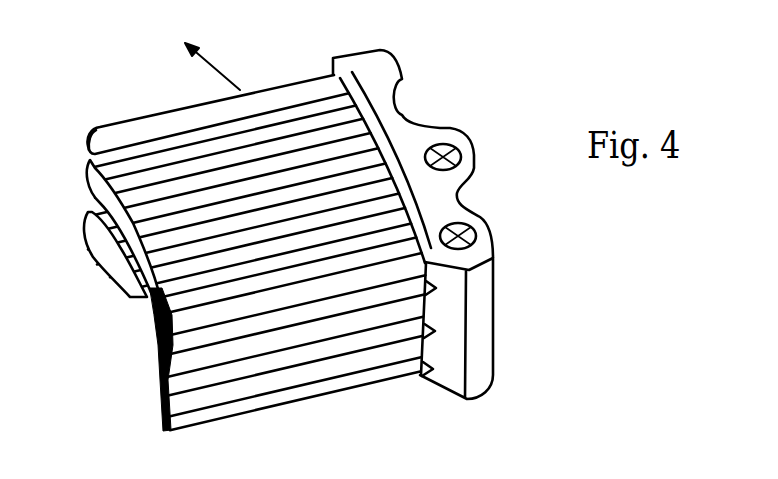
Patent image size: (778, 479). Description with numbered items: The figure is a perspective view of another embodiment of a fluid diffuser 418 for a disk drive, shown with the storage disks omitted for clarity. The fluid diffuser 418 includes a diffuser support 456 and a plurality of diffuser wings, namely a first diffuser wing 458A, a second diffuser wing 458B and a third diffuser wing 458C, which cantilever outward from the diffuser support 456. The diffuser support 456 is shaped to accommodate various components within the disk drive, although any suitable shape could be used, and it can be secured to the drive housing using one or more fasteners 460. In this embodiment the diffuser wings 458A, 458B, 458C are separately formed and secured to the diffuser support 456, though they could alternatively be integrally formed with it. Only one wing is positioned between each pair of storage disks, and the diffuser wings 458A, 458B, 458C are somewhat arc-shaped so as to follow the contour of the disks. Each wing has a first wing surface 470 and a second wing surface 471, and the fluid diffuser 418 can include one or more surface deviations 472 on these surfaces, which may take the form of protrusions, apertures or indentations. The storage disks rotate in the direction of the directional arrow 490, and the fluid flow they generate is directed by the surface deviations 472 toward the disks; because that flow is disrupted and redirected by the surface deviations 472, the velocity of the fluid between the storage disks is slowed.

The fluid diffuser 418 is at (507, 91).
The diffuser support 456 is at (378, 70).
The first diffuser wing 458A is at (97, 133).
The second diffuser wing 458B is at (88, 183).
The third diffuser wing 458C is at (86, 229).
The fasteners 460 is at (470, 228).
The first wing surface 470 is at (150, 127).
The second wing surface 471 is at (212, 402).
The surface deviations 472 is at (184, 303).
The directional arrow 490 is at (222, 66).